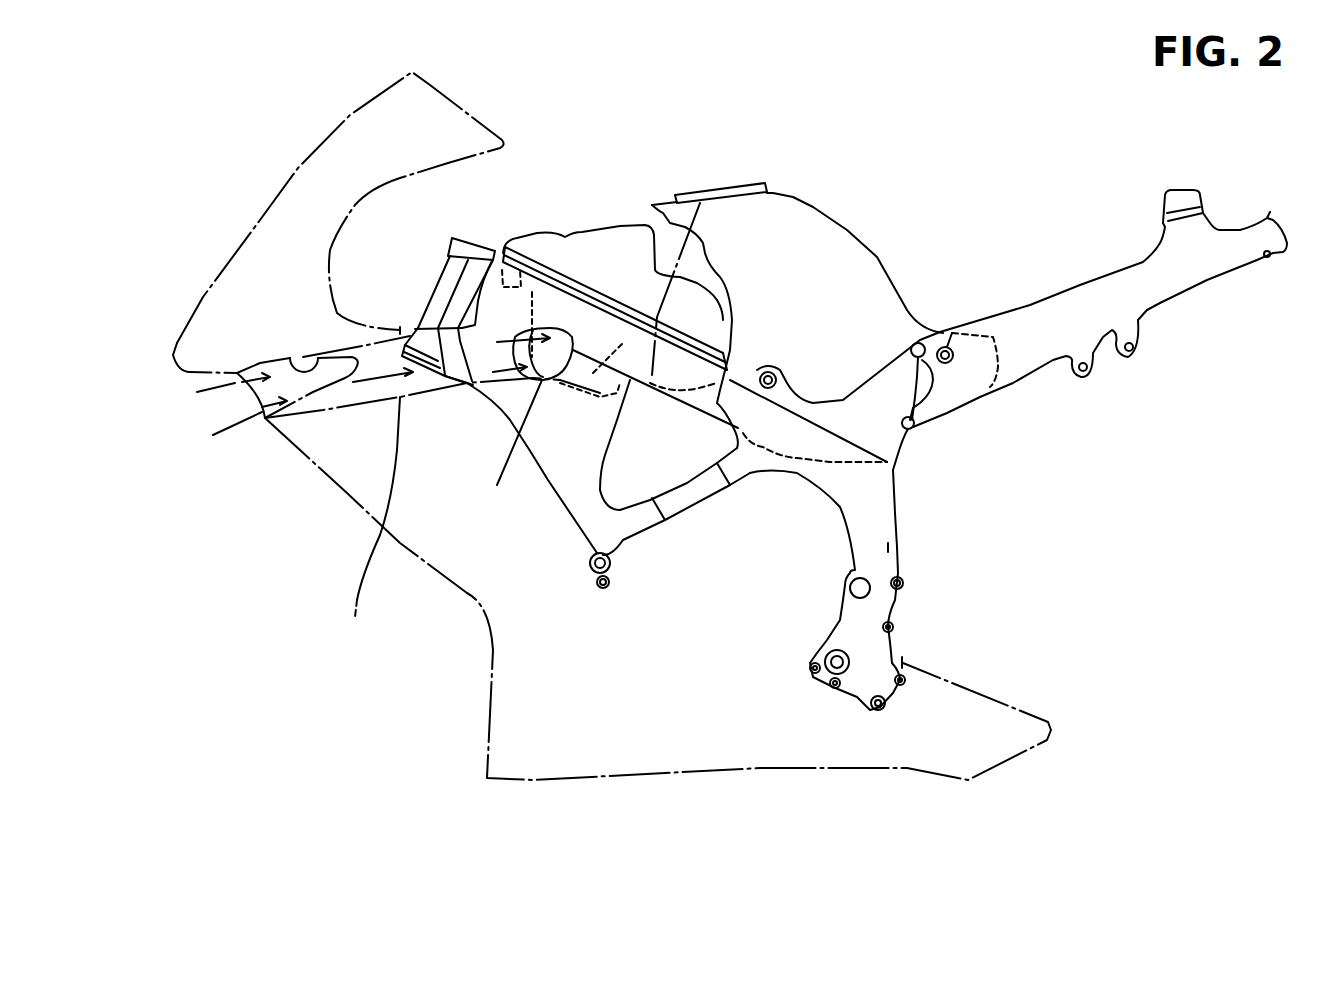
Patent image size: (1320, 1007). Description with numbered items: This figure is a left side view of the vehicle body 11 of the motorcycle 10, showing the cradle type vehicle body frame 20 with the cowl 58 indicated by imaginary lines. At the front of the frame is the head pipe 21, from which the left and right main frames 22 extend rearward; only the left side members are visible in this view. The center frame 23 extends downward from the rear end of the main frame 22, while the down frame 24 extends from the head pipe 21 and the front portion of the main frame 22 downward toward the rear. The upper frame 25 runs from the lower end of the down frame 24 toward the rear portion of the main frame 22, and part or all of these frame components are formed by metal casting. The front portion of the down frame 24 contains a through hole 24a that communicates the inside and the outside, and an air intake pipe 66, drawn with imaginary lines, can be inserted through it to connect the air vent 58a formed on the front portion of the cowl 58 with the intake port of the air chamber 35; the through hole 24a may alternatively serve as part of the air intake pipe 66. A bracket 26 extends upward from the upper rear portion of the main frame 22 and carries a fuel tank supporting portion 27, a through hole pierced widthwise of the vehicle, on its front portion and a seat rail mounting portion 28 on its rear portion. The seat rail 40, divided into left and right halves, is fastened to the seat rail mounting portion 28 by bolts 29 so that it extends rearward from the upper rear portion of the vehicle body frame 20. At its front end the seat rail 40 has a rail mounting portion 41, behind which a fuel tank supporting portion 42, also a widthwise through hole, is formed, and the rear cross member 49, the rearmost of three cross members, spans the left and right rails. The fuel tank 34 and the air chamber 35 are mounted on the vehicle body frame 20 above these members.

The motorcycle 10 is at (273, 153).
The vehicle body 11 is at (507, 217).
The vehicle body frame 20 is at (579, 283).
The head pipe 21 is at (445, 278).
The main frames 22 is at (703, 192).
The center frames 23 is at (888, 548).
The down frames 24 is at (568, 480).
The through holes 24a is at (516, 418).
The upper frames 25 is at (693, 495).
The brackets 26 is at (843, 405).
The fuel tank supporting portions 27 is at (768, 363).
The seat rail mounting portions 28 is at (897, 383).
The bolts 29 is at (918, 342).
The fuel tank 34 is at (827, 230).
The air chamber 35 is at (622, 233).
The seat rail 40 is at (1160, 307).
The rail mounting portions 41 is at (940, 400).
The fuel tank supporting portions 42 is at (952, 333).
The rear cross member 49 is at (1177, 200).
The cowl 58 is at (340, 493).
The air vents 58a is at (282, 347).
The air intake pipes 66 is at (368, 522).